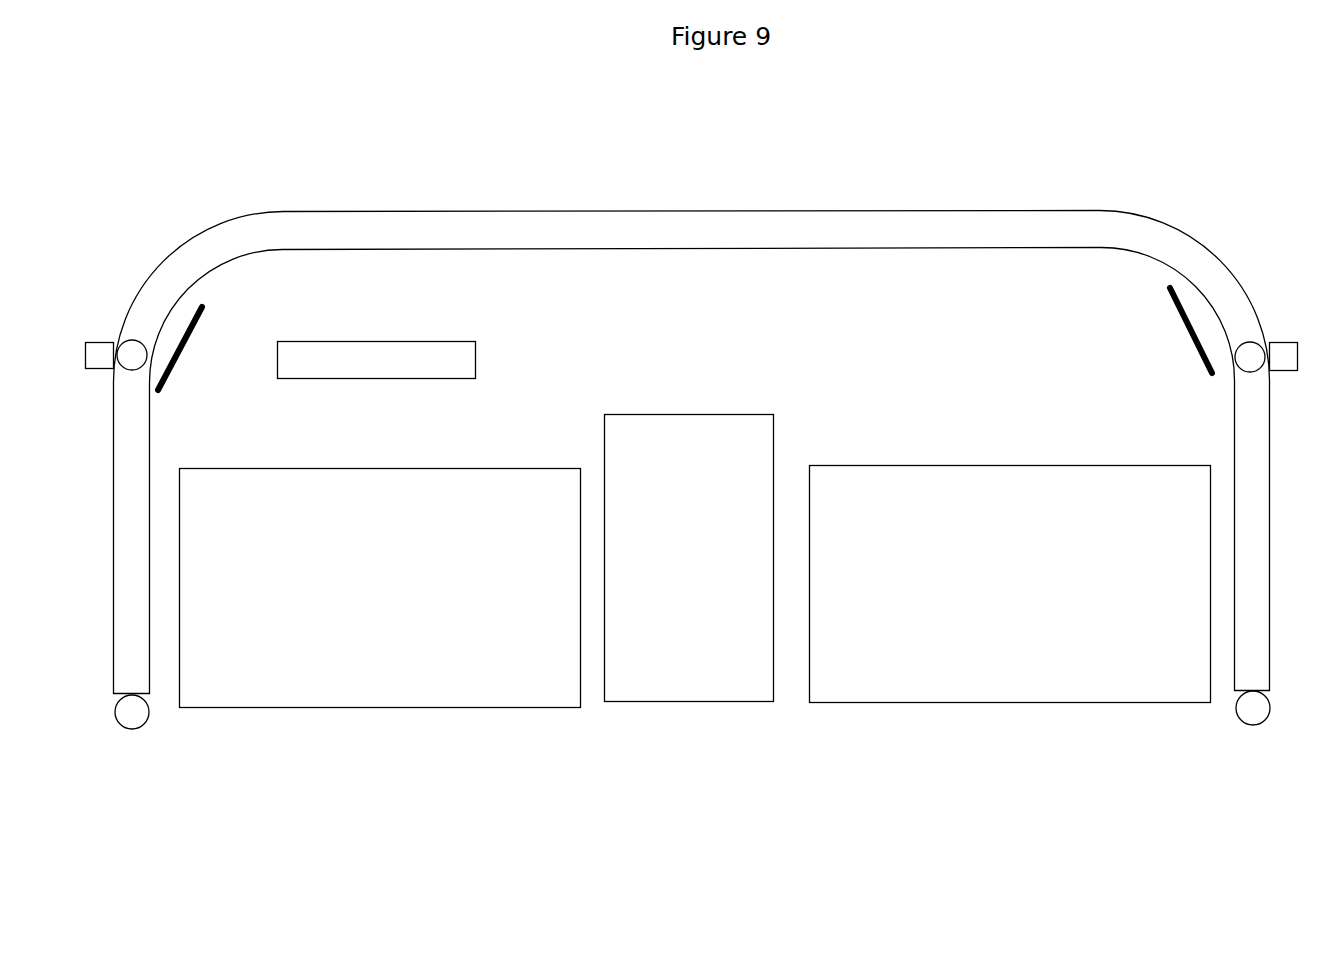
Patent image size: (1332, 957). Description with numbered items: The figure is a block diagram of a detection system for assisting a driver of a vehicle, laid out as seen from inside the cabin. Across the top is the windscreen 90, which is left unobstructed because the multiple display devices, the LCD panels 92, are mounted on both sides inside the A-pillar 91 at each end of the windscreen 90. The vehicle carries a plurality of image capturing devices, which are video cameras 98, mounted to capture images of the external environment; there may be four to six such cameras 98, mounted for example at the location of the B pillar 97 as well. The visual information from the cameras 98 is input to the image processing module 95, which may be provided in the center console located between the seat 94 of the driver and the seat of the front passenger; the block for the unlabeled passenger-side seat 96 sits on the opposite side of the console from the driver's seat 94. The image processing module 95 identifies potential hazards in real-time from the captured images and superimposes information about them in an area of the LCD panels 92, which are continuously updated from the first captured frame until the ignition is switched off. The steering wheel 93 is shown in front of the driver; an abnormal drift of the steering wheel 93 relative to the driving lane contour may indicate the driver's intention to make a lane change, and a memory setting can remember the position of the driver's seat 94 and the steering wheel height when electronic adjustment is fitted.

The windscreen 90 is at (455, 223).
The A-pillar 91 is at (128, 340).
The LCD panel 92 is at (197, 307).
The steering wheel 93 is at (476, 344).
The driver's seat 94 is at (347, 653).
The image processing module 95 is at (662, 658).
The right panel 96 is at (1060, 657).
The B pillar 97 is at (137, 726).
The image capturing device 98 is at (87, 342).